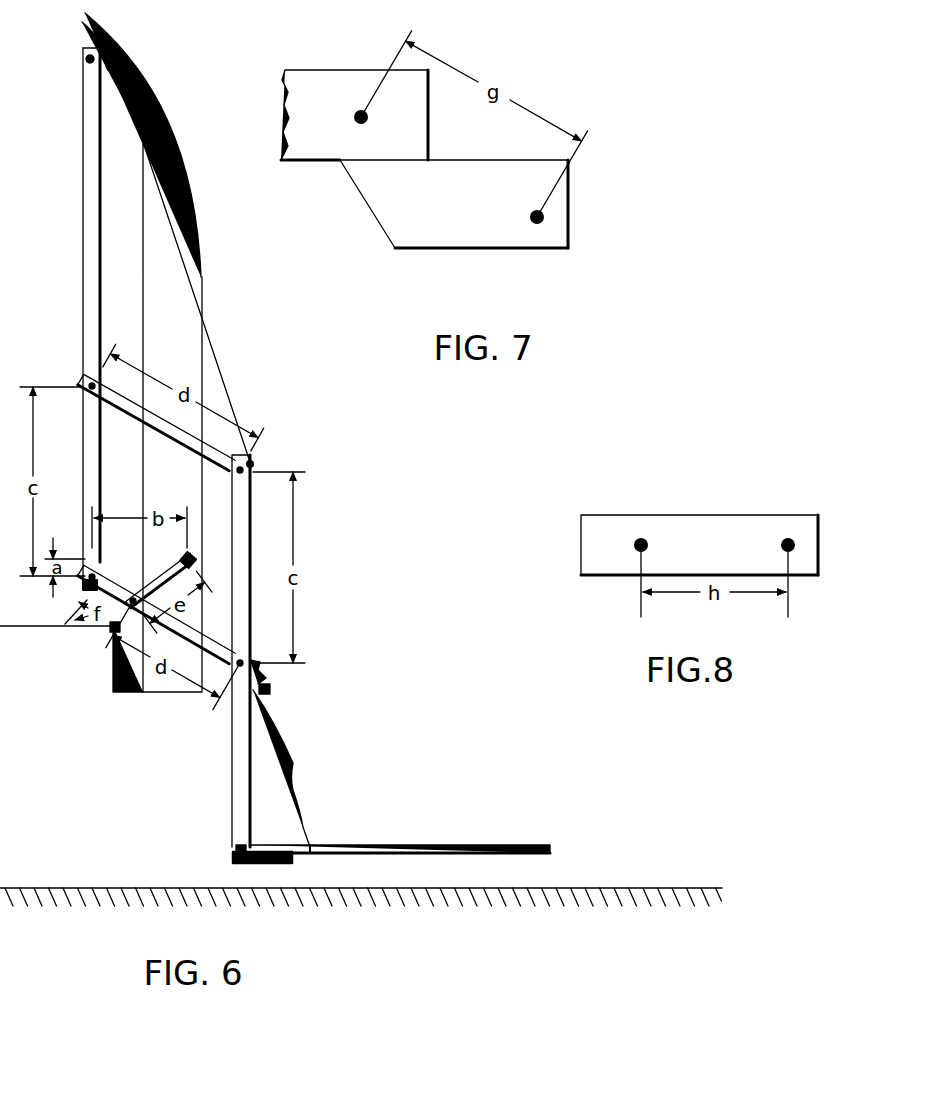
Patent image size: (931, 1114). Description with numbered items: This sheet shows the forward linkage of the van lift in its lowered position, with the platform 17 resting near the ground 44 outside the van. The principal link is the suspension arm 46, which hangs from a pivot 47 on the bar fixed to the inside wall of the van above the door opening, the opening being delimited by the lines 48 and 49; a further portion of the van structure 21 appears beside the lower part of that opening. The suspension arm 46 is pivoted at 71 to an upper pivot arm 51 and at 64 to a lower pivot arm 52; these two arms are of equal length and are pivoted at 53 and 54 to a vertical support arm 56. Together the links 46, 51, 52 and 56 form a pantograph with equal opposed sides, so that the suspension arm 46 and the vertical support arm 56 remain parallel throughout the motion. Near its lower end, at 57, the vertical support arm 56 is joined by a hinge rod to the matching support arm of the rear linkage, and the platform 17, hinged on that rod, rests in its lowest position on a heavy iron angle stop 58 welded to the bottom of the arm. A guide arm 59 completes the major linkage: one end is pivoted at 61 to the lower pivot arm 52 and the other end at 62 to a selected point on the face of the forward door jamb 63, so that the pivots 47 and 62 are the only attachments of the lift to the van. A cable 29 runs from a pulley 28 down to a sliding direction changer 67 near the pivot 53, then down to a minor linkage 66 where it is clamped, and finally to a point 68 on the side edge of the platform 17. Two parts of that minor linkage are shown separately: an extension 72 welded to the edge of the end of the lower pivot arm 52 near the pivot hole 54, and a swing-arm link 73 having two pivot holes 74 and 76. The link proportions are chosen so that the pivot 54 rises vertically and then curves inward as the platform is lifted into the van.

In FIG. 6, the platform 17 is at (522, 847).
In FIG. 6, the panel portion 21 is at (113, 652).
In FIG. 6, the pulley 28 is at (116, 60).
In FIG. 6, the cable 29 is at (207, 332).
In FIG. 6, the ground 44 is at (153, 887).
In FIG. 6, the suspension arm 46 is at (95, 213).
In FIG. 6, the pivot 47 is at (85, 59).
In FIG. 6, the door opening line 48 is at (131, 100).
In FIG. 6, the door opening line 49 is at (173, 693).
In FIG. 6, the upper pivot arm 51 is at (132, 412).
In FIG. 6, the lower pivot arm 52 is at (200, 640).
In FIG. 7, the lower pivot arm 52 is at (362, 78).
In FIG. 6, the pivot 53 is at (253, 462).
In FIG. 6, the pivot 54 is at (250, 655).
In FIG. 7, the pivot 54 is at (368, 123).
In FIG. 6, the vertical support arm 56 is at (246, 548).
In FIG. 6, the hinge rod connection 57 is at (234, 845).
In FIG. 6, the angle stop 58 is at (256, 862).
In FIG. 6, the guide arm 59 is at (172, 568).
In FIG. 6, the pivot 61 is at (110, 630).
In FIG. 6, the pivot 62 is at (194, 557).
In FIG. 6, the forward door jamb 63 is at (167, 163).
In FIG. 6, the pivot 64 is at (86, 582).
In FIG. 6, the minor linkage 66 is at (271, 690).
In FIG. 6, the sliding direction changer 67 is at (254, 470).
In FIG. 6, the cable securing point 68 is at (311, 846).
In FIG. 6, the pivot 71 is at (86, 382).
In FIG. 7, the extension 72 is at (513, 238).
In FIG. 8, the link 73 is at (704, 522).
In FIG. 8, the pivot hole 74 is at (634, 545).
In FIG. 8, the pivot hole 76 is at (781, 545).